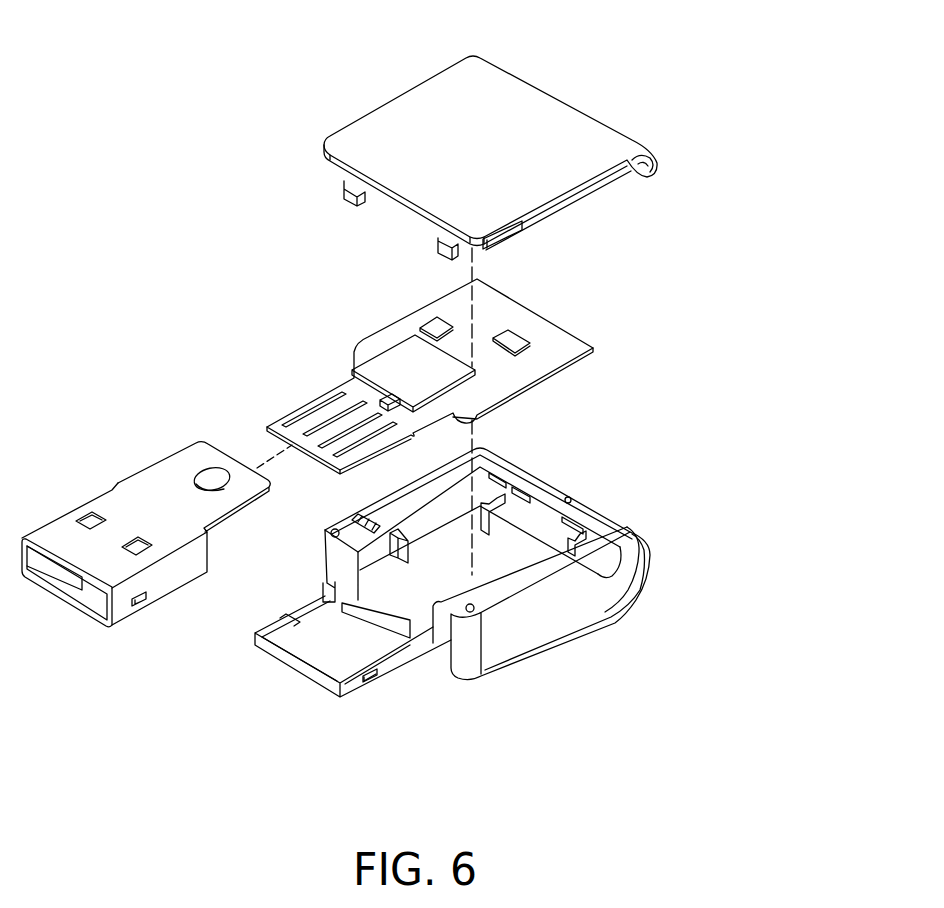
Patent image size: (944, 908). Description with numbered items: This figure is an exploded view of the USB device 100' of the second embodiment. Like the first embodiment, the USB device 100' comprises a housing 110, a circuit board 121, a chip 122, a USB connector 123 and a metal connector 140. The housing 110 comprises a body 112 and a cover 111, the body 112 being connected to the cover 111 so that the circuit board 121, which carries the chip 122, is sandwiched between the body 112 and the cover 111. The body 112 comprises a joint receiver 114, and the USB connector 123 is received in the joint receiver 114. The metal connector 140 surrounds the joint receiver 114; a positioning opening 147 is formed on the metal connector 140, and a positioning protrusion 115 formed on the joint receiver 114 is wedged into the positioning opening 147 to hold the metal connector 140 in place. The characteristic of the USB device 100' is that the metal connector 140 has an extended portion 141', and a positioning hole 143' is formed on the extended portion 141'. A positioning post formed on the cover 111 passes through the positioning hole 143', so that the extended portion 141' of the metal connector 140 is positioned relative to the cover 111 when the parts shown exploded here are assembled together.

The USB device 100' is at (420, 417).
The housing 110 is at (771, 44).
The cover 111 is at (540, 127).
The body 112 is at (613, 567).
The joint receiver 114 is at (398, 660).
The positioning protrusion 115 is at (373, 680).
The circuit board 121 is at (453, 303).
The chip 122 is at (397, 362).
The USB connector 123 is at (313, 410).
The metal connector 140 is at (118, 507).
The extended portion 141' is at (161, 455).
The positioning hole 143' is at (175, 436).
The positioning opening 147 is at (148, 607).